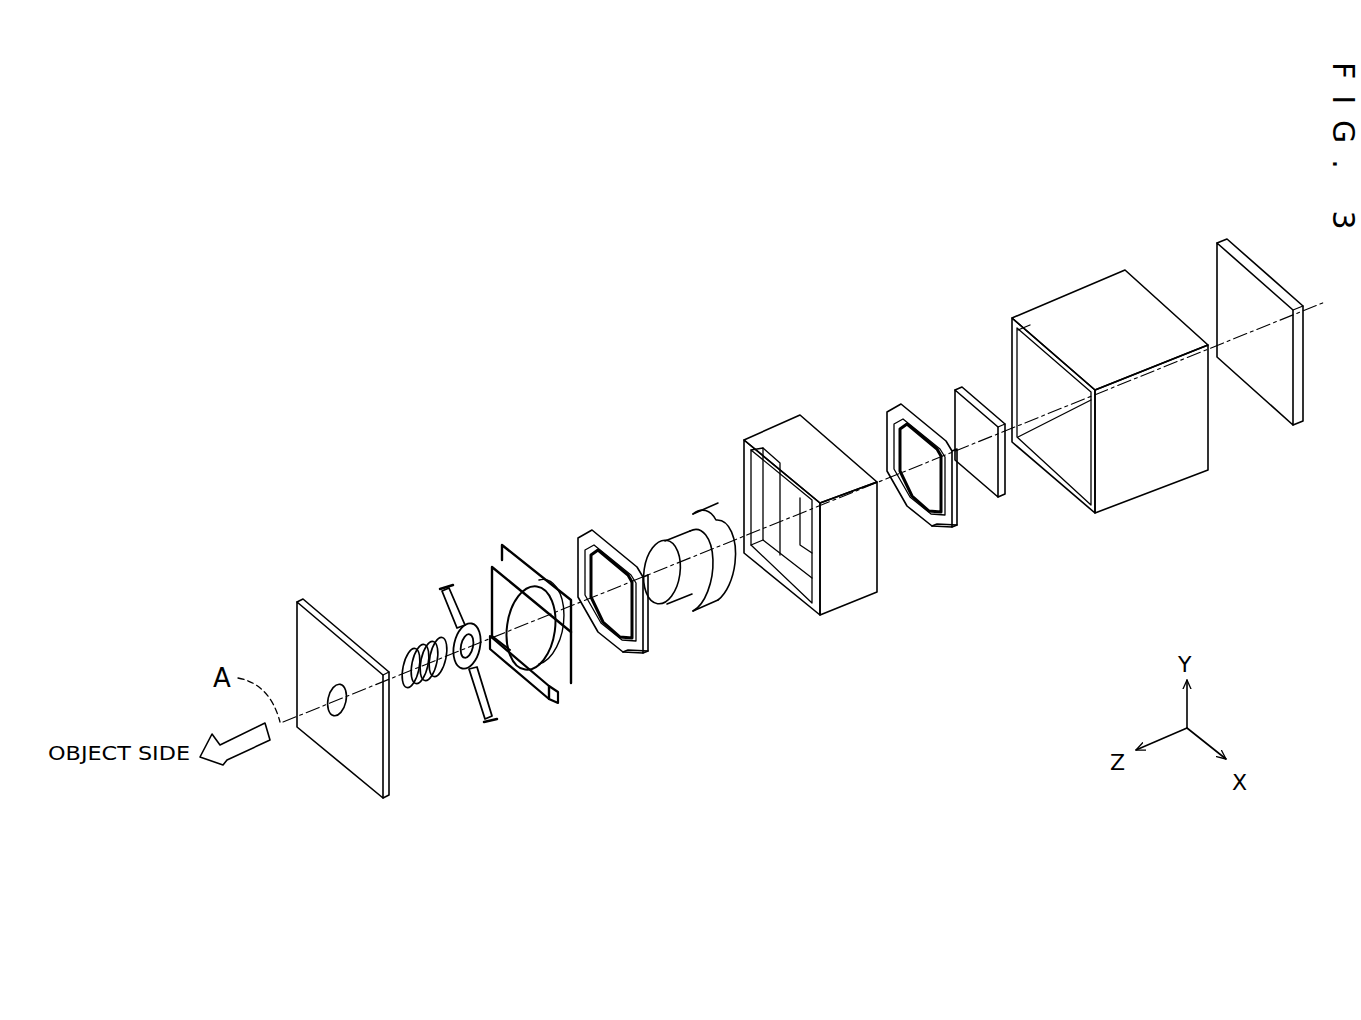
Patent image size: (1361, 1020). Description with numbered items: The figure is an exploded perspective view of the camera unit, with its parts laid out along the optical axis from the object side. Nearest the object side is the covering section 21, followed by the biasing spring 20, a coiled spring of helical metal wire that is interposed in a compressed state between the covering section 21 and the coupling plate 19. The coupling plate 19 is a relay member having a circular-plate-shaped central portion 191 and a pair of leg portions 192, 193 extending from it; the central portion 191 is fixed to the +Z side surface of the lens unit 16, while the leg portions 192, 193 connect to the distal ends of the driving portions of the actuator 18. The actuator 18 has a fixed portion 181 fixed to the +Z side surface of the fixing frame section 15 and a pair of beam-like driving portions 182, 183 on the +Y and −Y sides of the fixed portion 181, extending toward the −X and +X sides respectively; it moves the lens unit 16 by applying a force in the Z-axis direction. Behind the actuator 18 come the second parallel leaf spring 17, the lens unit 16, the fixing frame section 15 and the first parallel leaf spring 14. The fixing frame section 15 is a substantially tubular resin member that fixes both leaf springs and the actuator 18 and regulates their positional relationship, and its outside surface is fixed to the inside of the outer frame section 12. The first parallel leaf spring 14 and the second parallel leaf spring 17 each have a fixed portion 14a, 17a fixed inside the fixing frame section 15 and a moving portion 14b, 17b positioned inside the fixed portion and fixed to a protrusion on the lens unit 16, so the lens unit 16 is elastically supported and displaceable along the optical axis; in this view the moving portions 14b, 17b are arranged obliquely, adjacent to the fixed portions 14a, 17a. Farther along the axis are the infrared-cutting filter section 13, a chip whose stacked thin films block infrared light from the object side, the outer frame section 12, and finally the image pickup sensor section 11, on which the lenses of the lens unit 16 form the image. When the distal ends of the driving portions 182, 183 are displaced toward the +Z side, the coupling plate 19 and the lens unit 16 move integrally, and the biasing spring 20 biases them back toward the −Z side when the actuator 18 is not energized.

The image pickup sensor section 11 is at (1302, 395).
The outer frame section 12 is at (1168, 458).
The infrared-cutting filter section 13 is at (1000, 478).
The first parallel leaf spring 14 is at (902, 504).
The fixed portion 14a is at (889, 412).
The moving portion 14b is at (884, 432).
The fixing frame section 15 is at (845, 585).
The lens unit 16 is at (712, 590).
The second parallel leaf spring 17 is at (601, 620).
The fixed portion 17a is at (580, 536).
The moving portion 17b is at (573, 556).
The actuator 18 is at (519, 658).
The fixed portion 181 is at (497, 592).
The driving portion 182 is at (502, 558).
The driving portion 183 is at (584, 681).
The coupling plate 19 is at (461, 690).
The central portion 191 is at (445, 640).
The leg portion 192 is at (447, 604).
The leg portion 193 is at (484, 714).
The biasing spring 20 is at (434, 690).
The covering section 21 is at (385, 777).